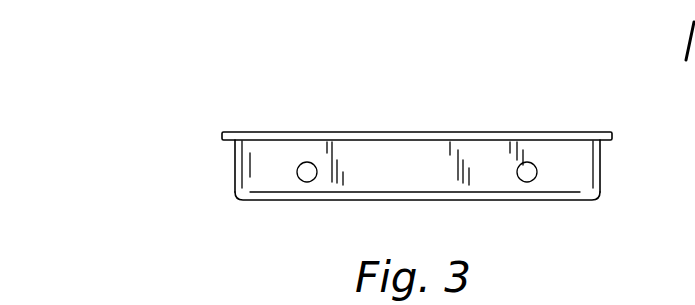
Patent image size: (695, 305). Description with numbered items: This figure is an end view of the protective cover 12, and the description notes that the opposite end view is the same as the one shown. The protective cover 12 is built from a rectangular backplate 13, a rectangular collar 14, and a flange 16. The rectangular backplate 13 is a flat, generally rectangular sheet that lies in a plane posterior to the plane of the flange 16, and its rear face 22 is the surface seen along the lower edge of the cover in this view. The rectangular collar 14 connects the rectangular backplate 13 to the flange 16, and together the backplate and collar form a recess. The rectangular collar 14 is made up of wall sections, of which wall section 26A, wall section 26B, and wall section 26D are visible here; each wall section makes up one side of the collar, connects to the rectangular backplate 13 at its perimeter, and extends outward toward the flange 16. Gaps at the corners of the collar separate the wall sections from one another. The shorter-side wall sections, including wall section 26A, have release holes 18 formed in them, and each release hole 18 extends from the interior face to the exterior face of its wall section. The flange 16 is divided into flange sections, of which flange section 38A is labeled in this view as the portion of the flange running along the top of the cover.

The protective cover 12 is at (235, 100).
The rectangular backplate 13 is at (345, 214).
The rectangular collar 14 is at (561, 149).
The flange 16 is at (300, 132).
The release holes 18 is at (301, 181).
The rear face 22 is at (318, 202).
The wall section 26A is at (421, 178).
The wall section 26B is at (208, 170).
The wall section 26D is at (612, 177).
The flange section 38A is at (354, 116).